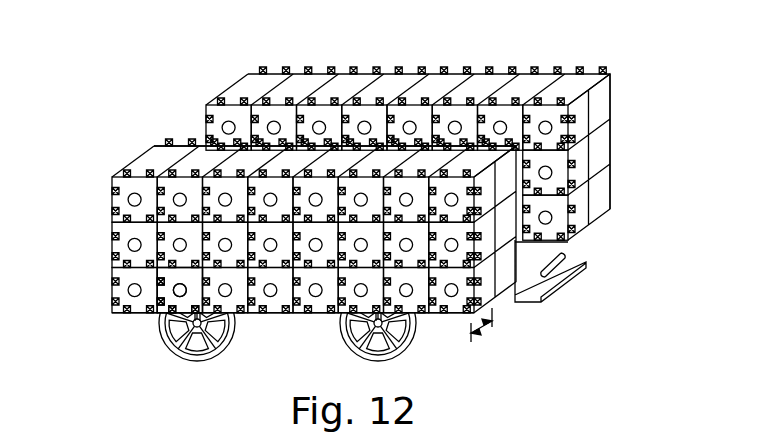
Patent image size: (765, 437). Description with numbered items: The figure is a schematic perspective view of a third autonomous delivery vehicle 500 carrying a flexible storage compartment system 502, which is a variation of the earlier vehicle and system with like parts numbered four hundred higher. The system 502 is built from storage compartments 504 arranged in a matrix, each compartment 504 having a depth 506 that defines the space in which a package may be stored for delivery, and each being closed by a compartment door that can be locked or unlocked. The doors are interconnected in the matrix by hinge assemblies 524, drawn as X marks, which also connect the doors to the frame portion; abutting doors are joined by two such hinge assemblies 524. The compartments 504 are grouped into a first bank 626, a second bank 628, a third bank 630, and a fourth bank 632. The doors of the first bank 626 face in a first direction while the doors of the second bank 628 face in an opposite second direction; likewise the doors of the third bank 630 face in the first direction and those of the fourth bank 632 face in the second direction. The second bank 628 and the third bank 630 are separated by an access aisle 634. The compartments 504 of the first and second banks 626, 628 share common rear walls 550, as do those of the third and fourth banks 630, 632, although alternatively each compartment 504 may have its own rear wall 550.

The third delivery vehicle 500 is at (190, 84).
The flexible storage compartment system 502 is at (630, 104).
The storage compartment 504 is at (140, 174).
The depth 506 is at (478, 336).
The hinge assembly 524 is at (155, 297).
The rear wall 550 is at (395, 158).
The first bank 626 is at (118, 320).
The second bank 628 is at (500, 184).
The third bank 630 is at (200, 125).
The fourth bank 632 is at (592, 80).
The access aisle 634 is at (568, 268).